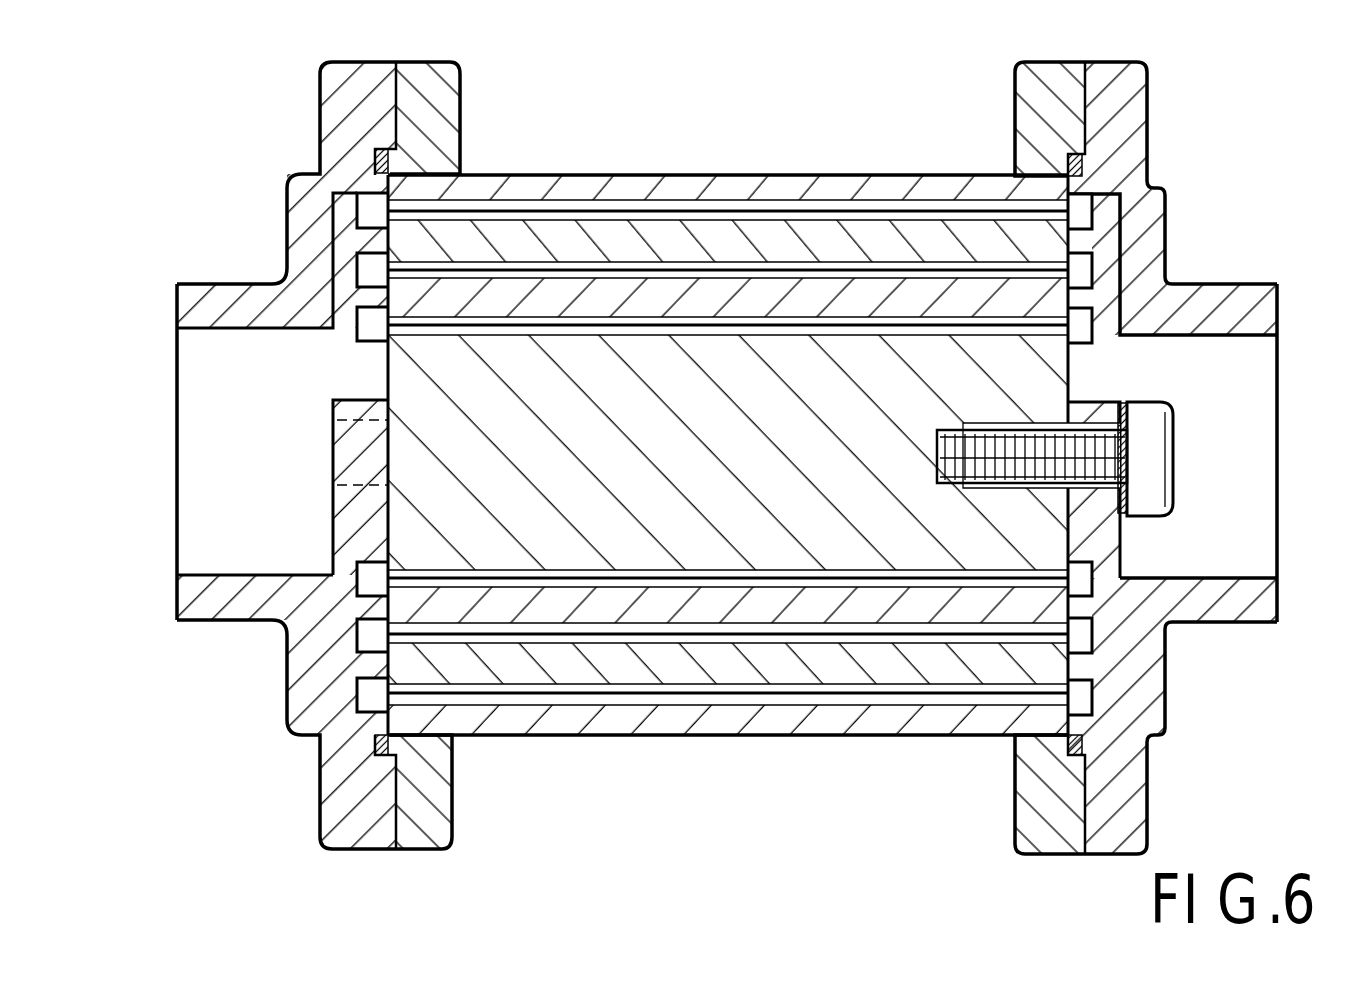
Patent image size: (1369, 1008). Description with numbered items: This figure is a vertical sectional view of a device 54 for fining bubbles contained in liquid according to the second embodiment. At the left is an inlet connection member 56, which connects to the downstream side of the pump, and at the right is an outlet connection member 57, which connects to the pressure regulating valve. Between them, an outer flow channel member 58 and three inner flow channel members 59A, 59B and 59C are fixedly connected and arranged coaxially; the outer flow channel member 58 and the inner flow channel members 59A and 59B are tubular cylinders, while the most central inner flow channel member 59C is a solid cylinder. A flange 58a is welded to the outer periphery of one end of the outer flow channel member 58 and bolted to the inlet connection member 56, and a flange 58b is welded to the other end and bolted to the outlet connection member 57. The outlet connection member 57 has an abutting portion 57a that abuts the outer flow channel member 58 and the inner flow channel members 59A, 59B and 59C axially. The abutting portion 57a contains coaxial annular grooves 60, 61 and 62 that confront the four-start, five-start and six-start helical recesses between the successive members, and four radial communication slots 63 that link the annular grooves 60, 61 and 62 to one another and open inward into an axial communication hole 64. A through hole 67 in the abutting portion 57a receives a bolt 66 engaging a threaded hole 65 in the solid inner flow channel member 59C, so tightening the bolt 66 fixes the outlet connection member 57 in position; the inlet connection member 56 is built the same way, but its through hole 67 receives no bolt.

The device for fining bubbles contained in liquid 54 is at (583, 154).
The inlet connection member 56 is at (295, 220).
The outlet connection member 57 is at (1150, 237).
The abutting portion 57a is at (1108, 530).
The outer flow channel member 58 is at (630, 187).
The flange 58a is at (440, 80).
The flange 58b is at (1048, 80).
The inner flow channel member 59A is at (676, 235).
The inner flow channel member 59B is at (778, 300).
The inner flow channel member 59C is at (878, 360).
The annular groove 60 is at (1083, 213).
The annular groove 61 is at (1083, 270).
The annular groove 62 is at (1081, 333).
The radial communication slot 63 is at (345, 272).
The communication hole 64 is at (200, 362).
The threaded hole 65 is at (1017, 478).
The bolt 66 is at (1160, 467).
The through hole 67 is at (344, 478).